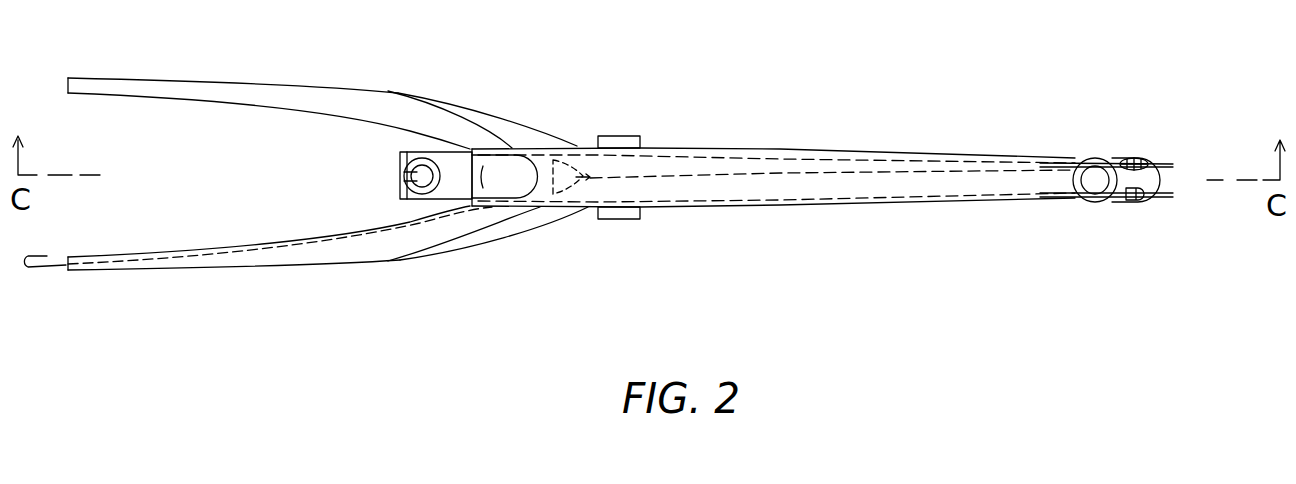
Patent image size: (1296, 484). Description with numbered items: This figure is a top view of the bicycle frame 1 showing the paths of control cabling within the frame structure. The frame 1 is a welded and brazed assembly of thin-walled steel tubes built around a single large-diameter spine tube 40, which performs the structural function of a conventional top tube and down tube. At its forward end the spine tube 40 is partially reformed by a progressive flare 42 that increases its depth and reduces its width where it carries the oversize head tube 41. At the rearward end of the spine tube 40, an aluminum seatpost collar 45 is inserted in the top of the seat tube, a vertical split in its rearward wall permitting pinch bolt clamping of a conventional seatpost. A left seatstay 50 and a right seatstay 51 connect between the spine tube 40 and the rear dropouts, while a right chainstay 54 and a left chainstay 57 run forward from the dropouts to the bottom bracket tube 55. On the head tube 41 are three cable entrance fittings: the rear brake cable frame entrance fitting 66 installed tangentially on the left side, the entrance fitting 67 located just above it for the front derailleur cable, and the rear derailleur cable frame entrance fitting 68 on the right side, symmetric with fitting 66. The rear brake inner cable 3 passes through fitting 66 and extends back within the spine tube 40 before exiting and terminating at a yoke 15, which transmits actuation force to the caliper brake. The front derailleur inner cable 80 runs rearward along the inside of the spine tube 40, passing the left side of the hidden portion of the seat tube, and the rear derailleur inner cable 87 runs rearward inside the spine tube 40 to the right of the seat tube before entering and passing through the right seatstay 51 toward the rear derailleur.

The bicycle frame 1 is at (758, 230).
The rear brake inner cable 3 is at (943, 172).
The yoke 15 is at (573, 192).
The spine tube 40 is at (744, 148).
The head tube 41 is at (1113, 202).
The progressive flare 42 is at (998, 112).
The seatpost collar 45 is at (421, 158).
The left seatstay 50 is at (190, 47).
The right seatstay 51 is at (193, 268).
The right chainstay 54 is at (497, 247).
The bottom bracket tube 55 is at (640, 212).
The left chainstay 57 is at (518, 120).
The brake cable frame entrance fitting 66 is at (1144, 161).
The entrance fitting 67 is at (1133, 159).
The rear derailleur cable frame entrance fitting 68 is at (1140, 203).
The front derailleur inner cable 80 is at (852, 158).
The rear derailleur inner cable 87 is at (887, 201).